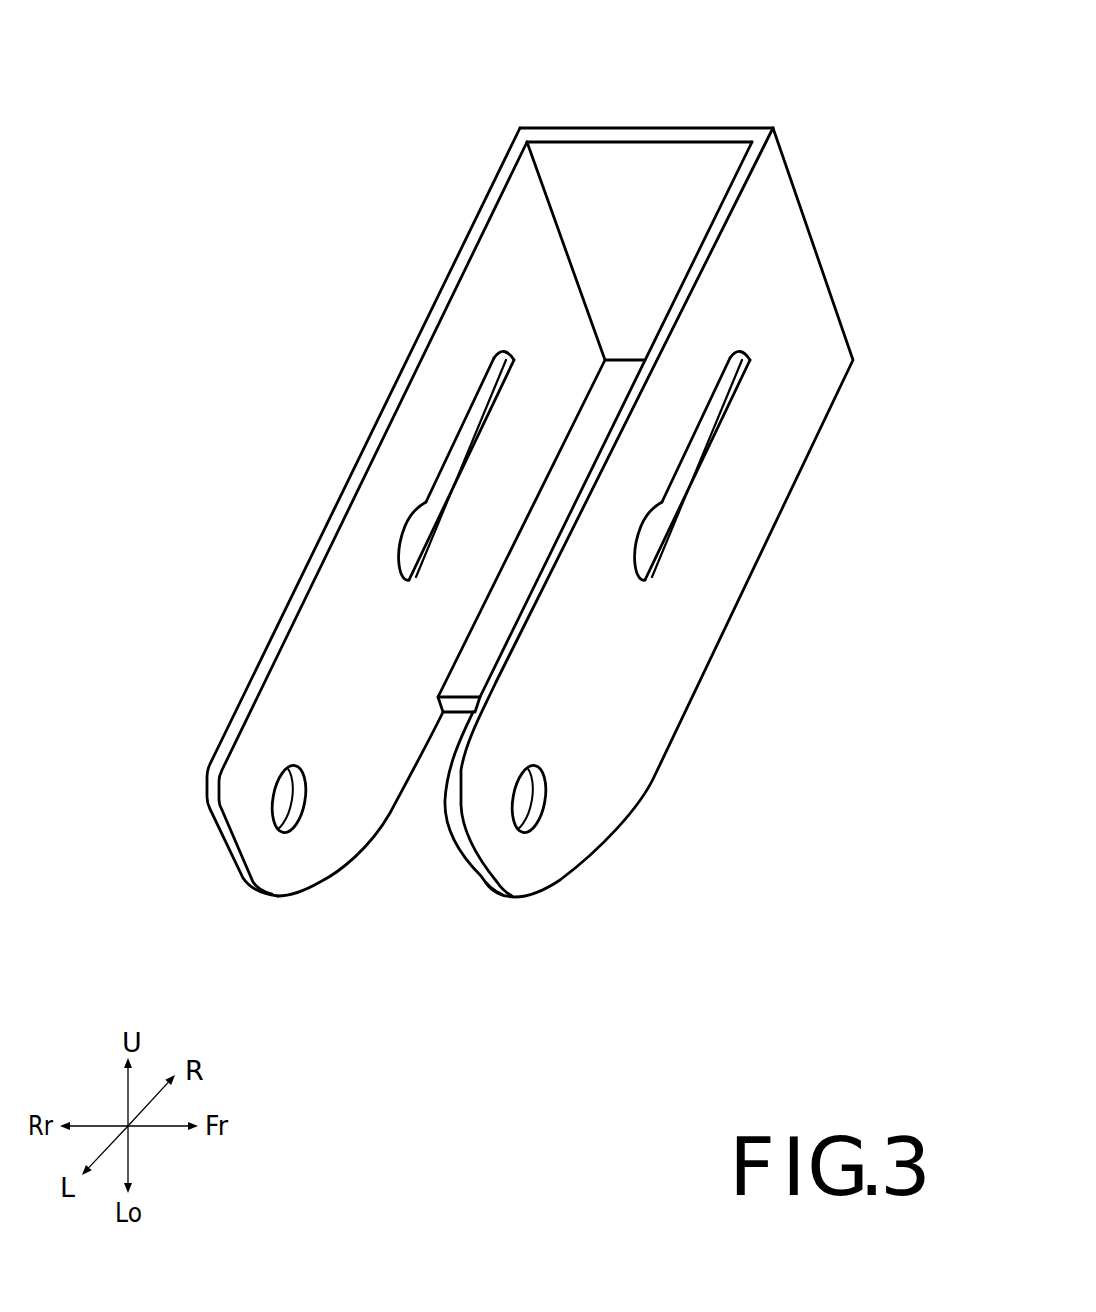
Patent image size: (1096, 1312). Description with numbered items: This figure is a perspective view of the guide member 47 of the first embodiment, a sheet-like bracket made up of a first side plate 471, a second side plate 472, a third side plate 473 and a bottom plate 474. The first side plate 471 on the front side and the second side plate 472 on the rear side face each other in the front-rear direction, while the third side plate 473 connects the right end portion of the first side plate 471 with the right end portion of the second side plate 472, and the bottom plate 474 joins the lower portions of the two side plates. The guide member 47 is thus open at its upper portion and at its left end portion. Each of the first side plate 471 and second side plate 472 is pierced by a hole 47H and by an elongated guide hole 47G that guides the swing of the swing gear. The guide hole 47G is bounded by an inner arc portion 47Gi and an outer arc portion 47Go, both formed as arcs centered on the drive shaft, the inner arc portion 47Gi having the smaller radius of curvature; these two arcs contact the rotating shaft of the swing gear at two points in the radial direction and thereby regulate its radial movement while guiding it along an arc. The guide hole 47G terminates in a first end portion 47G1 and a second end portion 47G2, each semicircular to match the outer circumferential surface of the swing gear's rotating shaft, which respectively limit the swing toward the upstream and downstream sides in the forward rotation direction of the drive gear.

The guide member 47 is at (887, 75).
The first side plate 471 is at (696, 512).
The second side plate 472 is at (322, 533).
The third side plate 473 is at (662, 128).
The bottom plate 474 is at (453, 713).
The guide hole 47G is at (791, 472).
The first end portion 47G1 is at (645, 561).
The second end portion 47G2 is at (755, 383).
The inner arc portion 47Gi is at (712, 420).
The outer arc portion 47Go is at (705, 503).
The hole 47H is at (548, 800).